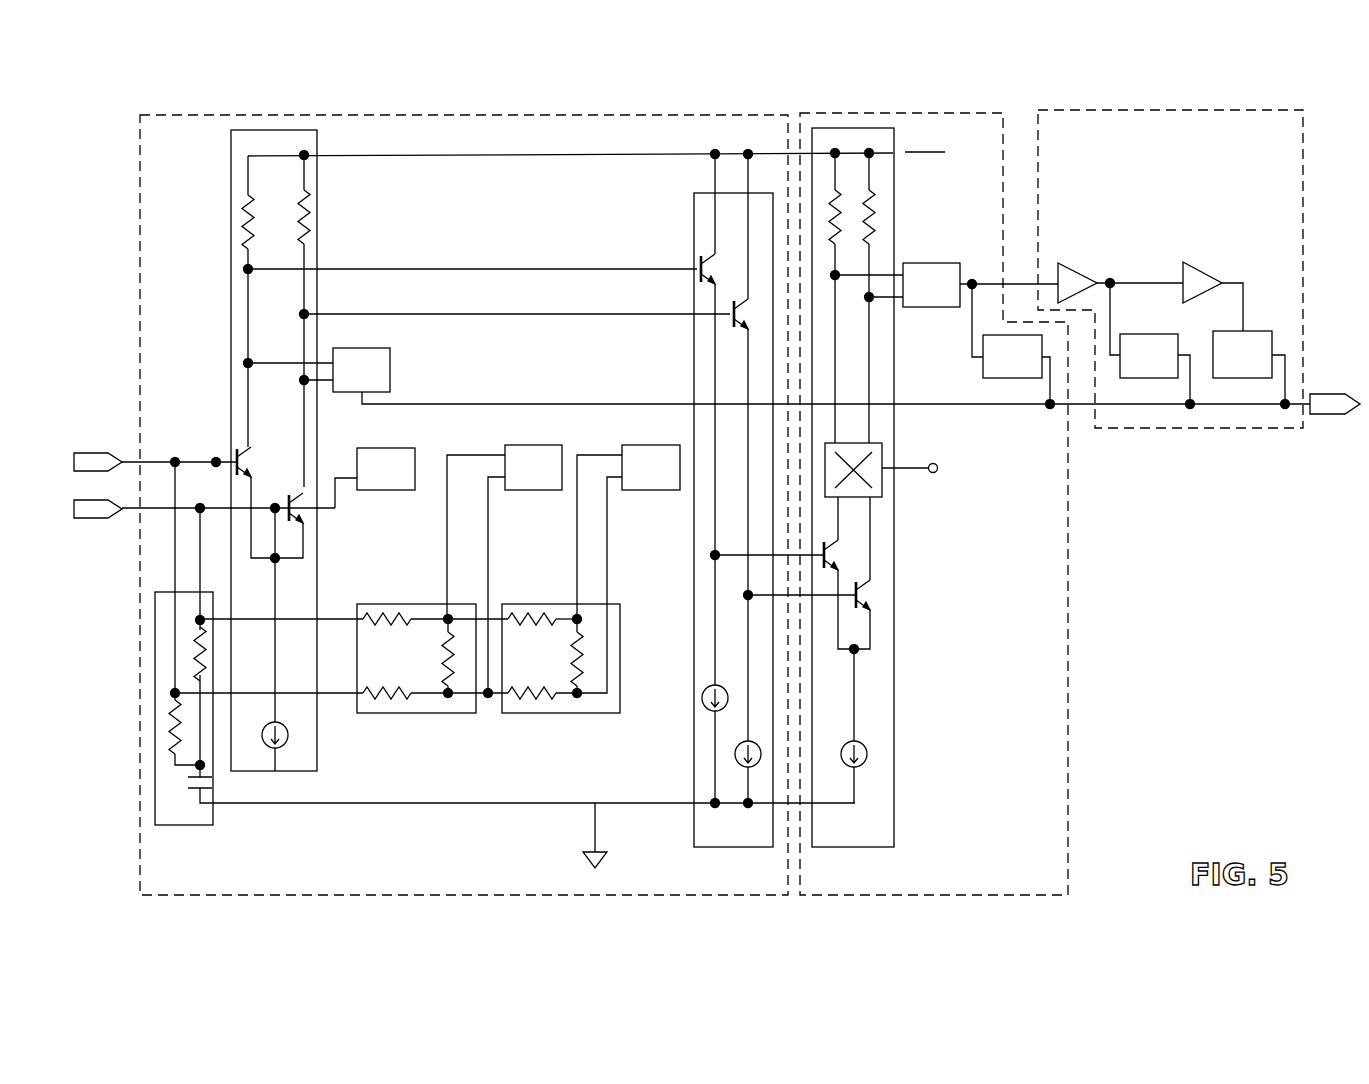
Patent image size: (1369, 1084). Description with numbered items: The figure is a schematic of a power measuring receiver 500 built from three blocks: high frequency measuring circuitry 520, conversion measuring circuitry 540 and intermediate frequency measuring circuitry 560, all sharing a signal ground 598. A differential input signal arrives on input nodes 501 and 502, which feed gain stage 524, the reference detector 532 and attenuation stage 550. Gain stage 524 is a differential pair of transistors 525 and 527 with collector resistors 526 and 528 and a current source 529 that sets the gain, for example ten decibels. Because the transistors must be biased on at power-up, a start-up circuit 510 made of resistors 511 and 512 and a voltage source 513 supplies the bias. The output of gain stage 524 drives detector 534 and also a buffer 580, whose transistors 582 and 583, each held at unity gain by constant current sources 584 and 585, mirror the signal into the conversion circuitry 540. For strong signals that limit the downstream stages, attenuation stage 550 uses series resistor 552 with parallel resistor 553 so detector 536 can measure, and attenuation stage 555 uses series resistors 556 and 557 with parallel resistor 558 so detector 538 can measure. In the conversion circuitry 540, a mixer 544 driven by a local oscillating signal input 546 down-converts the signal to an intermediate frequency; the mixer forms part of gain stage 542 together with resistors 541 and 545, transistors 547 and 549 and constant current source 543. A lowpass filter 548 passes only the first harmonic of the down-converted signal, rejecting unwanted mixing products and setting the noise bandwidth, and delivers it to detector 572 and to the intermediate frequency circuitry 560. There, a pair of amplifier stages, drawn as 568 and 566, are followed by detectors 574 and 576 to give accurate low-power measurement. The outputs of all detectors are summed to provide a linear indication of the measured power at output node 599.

The power measuring receiver 500 is at (718, 98).
The input node 501 is at (90, 452).
The input node 502 is at (86, 522).
The start-up circuit 510 is at (477, 659).
The resistor 511 is at (210, 652).
The resistor 512 is at (170, 740).
The voltage source 513 is at (200, 805).
The high frequency measuring circuitry 520 is at (140, 200).
The gain stage 524 is at (268, 450).
The transistor 525 is at (240, 448).
The resistor 526 is at (243, 232).
The transistor 527 is at (300, 524).
The resistor 528 is at (298, 214).
The current source 529 is at (270, 733).
The detector 532 is at (375, 478).
The detector 534 is at (779, 376).
The detector 536 is at (504, 569).
The detector 538 is at (628, 569).
The conversion measuring circuitry 540 is at (1068, 846).
The resistor 541 is at (877, 212).
The gain stage 542 is at (838, 487).
The constant current source 543 is at (868, 753).
The mixer 544 is at (884, 452).
The resistor 545 is at (848, 244).
The local oscillating signal input 546 is at (917, 458).
The transistor 547 is at (840, 553).
The lowpass filter 548 is at (946, 263).
The transistor 549 is at (873, 590).
The attenuation stage 550 is at (365, 658).
The resistor 552 is at (388, 710).
The resistor 553 is at (440, 659).
The attenuation stage 555 is at (581, 658).
The resistor 556 is at (528, 605).
The resistor 557 is at (385, 605).
The resistor 558 is at (585, 659).
The intermediate frequency measuring circuitry 560 is at (1207, 428).
The gain stage 566 is at (1196, 262).
The buffer amplifier 568 is at (1068, 265).
The detector 572 is at (1013, 346).
The detector 574 is at (1152, 346).
The detector 576 is at (1251, 370).
The buffer 580 is at (510, 499).
The transistor 582 is at (699, 256).
The transistor 583 is at (733, 328).
The constant current source 584 is at (703, 702).
The constant current source 585 is at (745, 770).
The ground 598 is at (600, 863).
The node 599 is at (1330, 411).